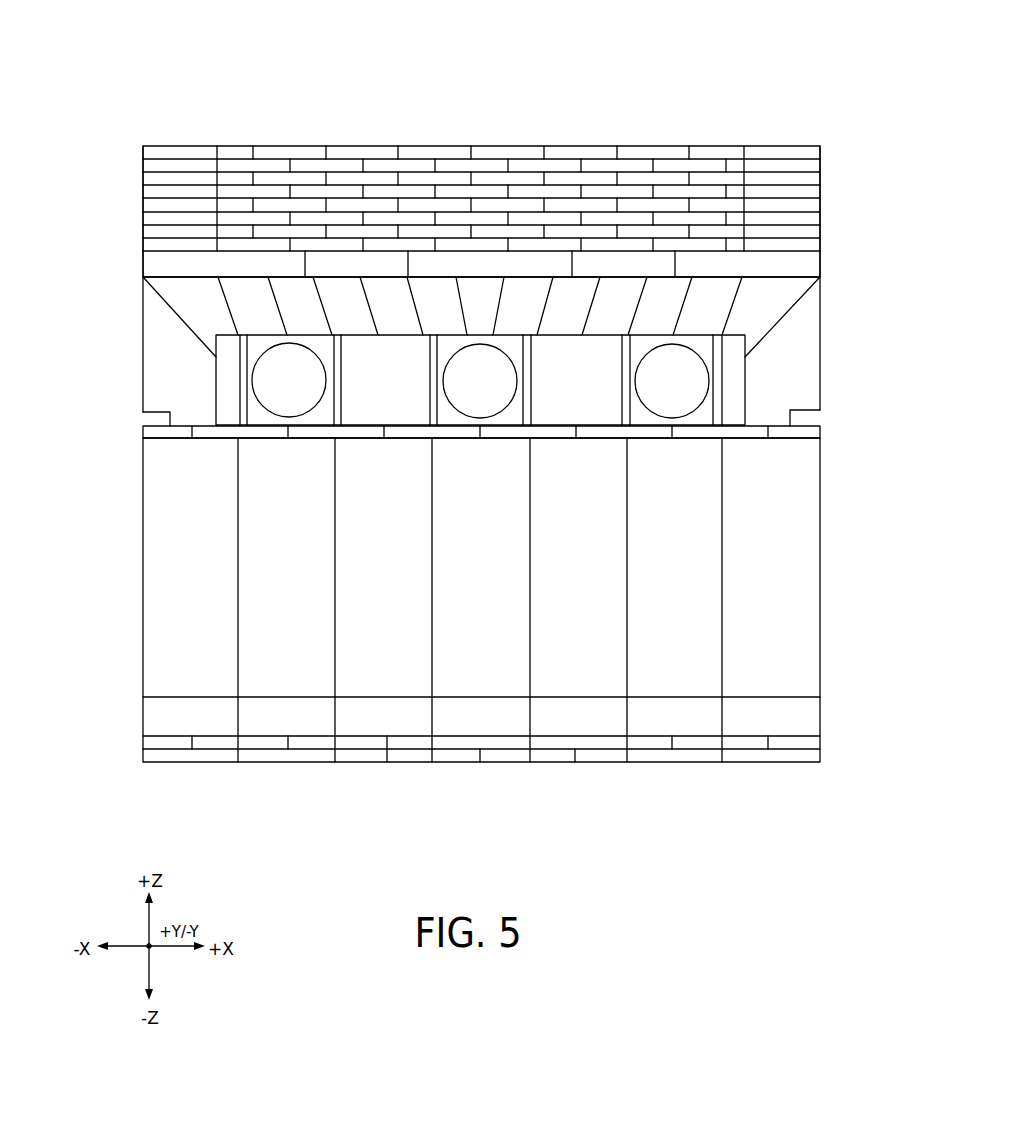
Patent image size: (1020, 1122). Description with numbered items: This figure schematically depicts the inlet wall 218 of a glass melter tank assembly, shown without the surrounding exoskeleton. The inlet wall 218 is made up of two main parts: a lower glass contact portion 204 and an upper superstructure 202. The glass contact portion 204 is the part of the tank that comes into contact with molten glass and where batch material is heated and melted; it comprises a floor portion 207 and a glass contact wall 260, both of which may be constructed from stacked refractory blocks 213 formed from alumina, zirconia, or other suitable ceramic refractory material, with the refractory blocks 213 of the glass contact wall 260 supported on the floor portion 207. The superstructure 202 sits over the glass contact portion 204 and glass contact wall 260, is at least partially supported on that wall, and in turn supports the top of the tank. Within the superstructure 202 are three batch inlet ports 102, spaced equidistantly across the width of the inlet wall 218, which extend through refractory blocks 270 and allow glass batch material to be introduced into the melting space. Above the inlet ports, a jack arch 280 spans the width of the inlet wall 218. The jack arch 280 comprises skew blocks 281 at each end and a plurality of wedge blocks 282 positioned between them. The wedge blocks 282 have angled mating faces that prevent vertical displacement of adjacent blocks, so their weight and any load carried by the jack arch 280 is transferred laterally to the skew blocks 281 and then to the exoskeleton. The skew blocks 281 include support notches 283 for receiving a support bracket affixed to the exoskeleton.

The inlet wall 218 is at (768, 102).
The superstructure 202 is at (85, 148).
The glass contact portion 204 is at (85, 448).
The wedge blocks 282 is at (238, 297).
The jack arch 280 is at (832, 309).
The skew blocks 281 is at (162, 373).
The support notches 283 is at (145, 417).
The batch inlet port 102 is at (270, 393).
The refractory blocks 270 is at (307, 424).
The glass contact wall 260 is at (826, 546).
The refractory blocks 213 is at (288, 677).
The floor portion 207 is at (717, 780).